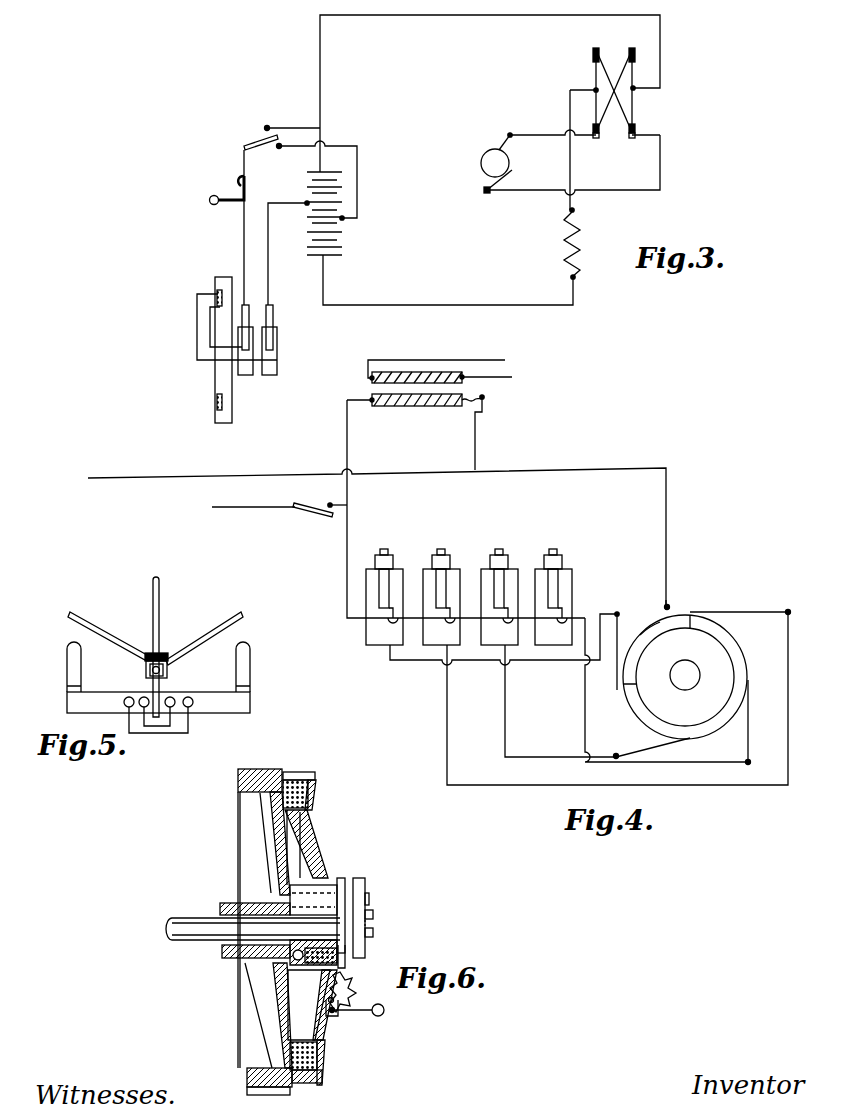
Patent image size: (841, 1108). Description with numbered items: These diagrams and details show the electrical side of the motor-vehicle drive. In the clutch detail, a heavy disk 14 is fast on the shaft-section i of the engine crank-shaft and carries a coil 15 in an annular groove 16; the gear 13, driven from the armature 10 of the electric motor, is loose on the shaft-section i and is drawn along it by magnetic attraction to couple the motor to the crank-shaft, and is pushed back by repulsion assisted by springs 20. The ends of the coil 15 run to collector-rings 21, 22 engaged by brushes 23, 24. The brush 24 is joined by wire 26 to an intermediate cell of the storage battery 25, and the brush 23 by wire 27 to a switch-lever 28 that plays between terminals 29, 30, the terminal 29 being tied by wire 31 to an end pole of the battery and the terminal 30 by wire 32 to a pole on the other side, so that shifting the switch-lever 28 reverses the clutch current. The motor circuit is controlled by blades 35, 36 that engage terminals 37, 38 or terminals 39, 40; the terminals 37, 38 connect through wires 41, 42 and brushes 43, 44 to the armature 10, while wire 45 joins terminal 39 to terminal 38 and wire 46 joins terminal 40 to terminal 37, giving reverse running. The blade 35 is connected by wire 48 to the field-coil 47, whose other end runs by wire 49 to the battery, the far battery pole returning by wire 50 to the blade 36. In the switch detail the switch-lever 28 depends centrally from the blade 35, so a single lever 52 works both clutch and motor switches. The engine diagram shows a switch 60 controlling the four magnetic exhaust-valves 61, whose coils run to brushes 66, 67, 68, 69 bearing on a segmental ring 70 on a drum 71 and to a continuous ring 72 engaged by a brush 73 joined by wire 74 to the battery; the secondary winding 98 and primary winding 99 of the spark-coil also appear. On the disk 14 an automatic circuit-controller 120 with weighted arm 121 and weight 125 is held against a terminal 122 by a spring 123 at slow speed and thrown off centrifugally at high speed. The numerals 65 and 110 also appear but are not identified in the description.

In FIG. 3, the armature 10 is at (482, 170).
In FIG. 6, the gear 13 is at (243, 769).
In FIG. 6, the clutch-disk 14 is at (318, 825).
In FIG. 3, the coil 15 is at (218, 294).
In FIG. 6, the coil 15 is at (308, 795).
In FIG. 6, the annular groove 16 is at (310, 772).
In FIG. 6, the springs 20 is at (312, 990).
In FIG. 3, the collector-ring 21 is at (246, 375).
In FIG. 6, the collector-ring 21 is at (338, 905).
In FIG. 3, the collector-ring 22 is at (270, 375).
In FIG. 6, the collector-ring 22 is at (369, 892).
In FIG. 3, the brush 23 is at (252, 298).
In FIG. 6, the brush 23 is at (341, 878).
In FIG. 3, the brush 24 is at (271, 305).
In FIG. 6, the brush 24 is at (358, 878).
In FIG. 3, the storage battery 25 is at (307, 224).
In FIG. 3, the wire 26 is at (268, 258).
In FIG. 3, the wire 27 is at (244, 232).
In FIG. 3, the switch-lever 28 is at (244, 147).
In FIG. 5, the switch-lever 28 is at (156, 717).
In FIG. 3, the terminal 29 is at (267, 126).
In FIG. 5, the terminal 29 is at (127, 697).
In FIG. 3, the terminal 30 is at (278, 149).
In FIG. 5, the terminal 30 is at (142, 697).
In FIG. 3, the wire 31 is at (289, 128).
In FIG. 3, the wire 32 is at (358, 172).
In FIG. 3, the switch blade 35 is at (596, 108).
In FIG. 5, the switch blade 35 is at (116, 622).
In FIG. 3, the switch blade 36 is at (632, 108).
In FIG. 3, the terminal 37 is at (596, 138).
In FIG. 5, the terminal 37 is at (250, 660).
In FIG. 3, the terminal 38 is at (632, 138).
In FIG. 3, the terminal 39 is at (594, 48).
In FIG. 5, the terminal 39 is at (67, 672).
In FIG. 3, the terminal 40 is at (632, 48).
In FIG. 3, the wire 41 is at (540, 135).
In FIG. 3, the wire 42 is at (535, 190).
In FIG. 3, the brush 43 is at (508, 136).
In FIG. 3, the brush 44 is at (510, 175).
In FIG. 3, the wire 45 is at (620, 112).
In FIG. 3, the wire 46 is at (619, 78).
In FIG. 3, the field-coil 47 is at (580, 243).
In FIG. 3, the wire 48 is at (570, 90).
In FIG. 3, the wire 49 is at (497, 305).
In FIG. 3, the wire 50 is at (320, 72).
In FIG. 5, the lever 52 is at (159, 608).
In FIG. 4, the switch 60 is at (310, 512).
In FIG. 4, the magnetic exhaust-valve 61 is at (394, 557).
In FIG. 4, the conductor 65 is at (347, 600).
In FIG. 4, the brush 66 is at (621, 700).
In FIG. 4, the brush 67 is at (640, 748).
In FIG. 4, the brush 68 is at (748, 742).
In FIG. 4, the brush 69 is at (775, 612).
In FIG. 4, the segmental ring 70 is at (743, 650).
In FIG. 4, the drum 71 is at (706, 672).
In FIG. 4, the continuous metal ring 72 is at (672, 610).
In FIG. 4, the brush 73 is at (660, 622).
In FIG. 4, the wire 74 is at (377, 537).
In FIG. 4, the secondary winding 98 is at (417, 372).
In FIG. 4, the primary winding 99 is at (417, 406).
In FIG. 4, the contact 110 is at (330, 503).
In FIG. 3, the circuit-controller 120 is at (245, 190).
In FIG. 6, the circuit-controller 120 is at (350, 995).
In FIG. 3, the weighted arm 121 is at (211, 204).
In FIG. 6, the weighted arm 121 is at (360, 1015).
In FIG. 3, the circuit-terminal 122 is at (240, 180).
In FIG. 6, the circuit-terminal 122 is at (329, 1001).
In FIG. 6, the spring 123 is at (345, 985).
In FIG. 6, the weight 125 is at (384, 1010).
In FIG. 6, the shaft-section i is at (373, 918).